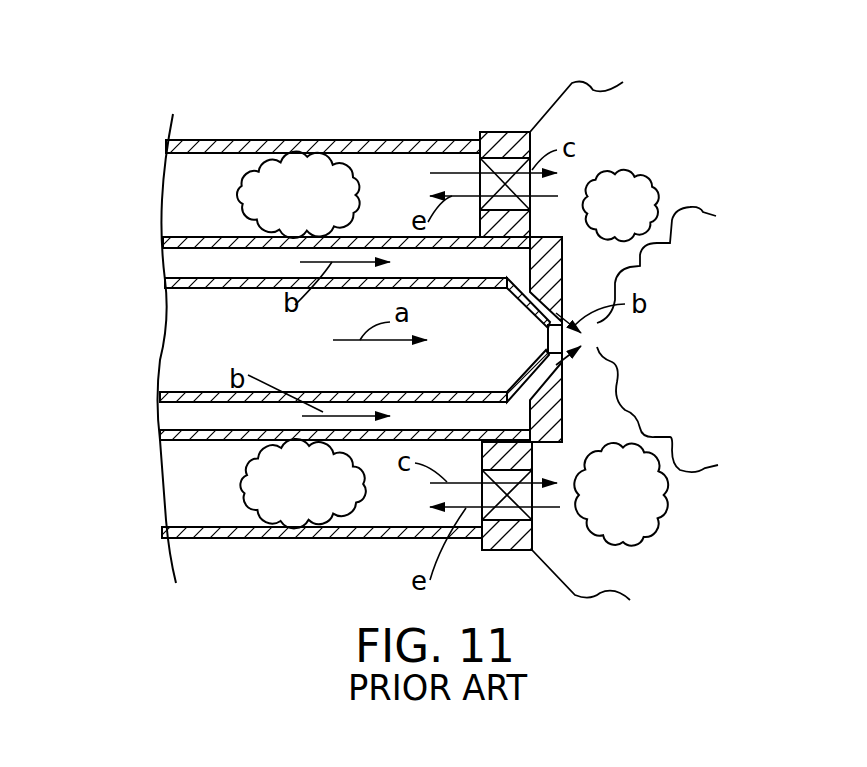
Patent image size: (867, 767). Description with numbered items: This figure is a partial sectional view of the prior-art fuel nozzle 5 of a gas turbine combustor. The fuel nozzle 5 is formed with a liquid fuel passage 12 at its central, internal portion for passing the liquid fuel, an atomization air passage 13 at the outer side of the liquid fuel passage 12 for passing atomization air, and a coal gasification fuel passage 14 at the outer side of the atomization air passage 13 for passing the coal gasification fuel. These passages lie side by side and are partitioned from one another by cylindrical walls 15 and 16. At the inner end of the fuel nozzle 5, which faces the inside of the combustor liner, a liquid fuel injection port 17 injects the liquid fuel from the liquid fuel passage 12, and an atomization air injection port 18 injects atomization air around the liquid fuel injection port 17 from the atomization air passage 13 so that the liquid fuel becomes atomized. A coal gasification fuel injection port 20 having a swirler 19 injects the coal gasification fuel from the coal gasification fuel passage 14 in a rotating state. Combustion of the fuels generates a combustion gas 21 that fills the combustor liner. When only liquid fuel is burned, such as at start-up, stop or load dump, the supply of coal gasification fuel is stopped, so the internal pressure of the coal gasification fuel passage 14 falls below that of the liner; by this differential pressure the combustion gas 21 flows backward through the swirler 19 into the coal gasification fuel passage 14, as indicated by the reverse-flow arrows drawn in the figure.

The fuel nozzle 5 is at (256, 131).
The liquid fuel passage 12 is at (188, 355).
The atomization air passage 13 is at (188, 268).
The coal gasification fuel passage 14 is at (182, 182).
The cylindrical wall 15 is at (215, 288).
The cylindrical wall 16 is at (187, 236).
The liquid fuel injection port 17 is at (562, 342).
The atomization air injection port 18 is at (563, 313).
The swirler 19 is at (507, 160).
The coal gasification fuel injection port 20 is at (530, 203).
The combustion gas 21 is at (308, 180).